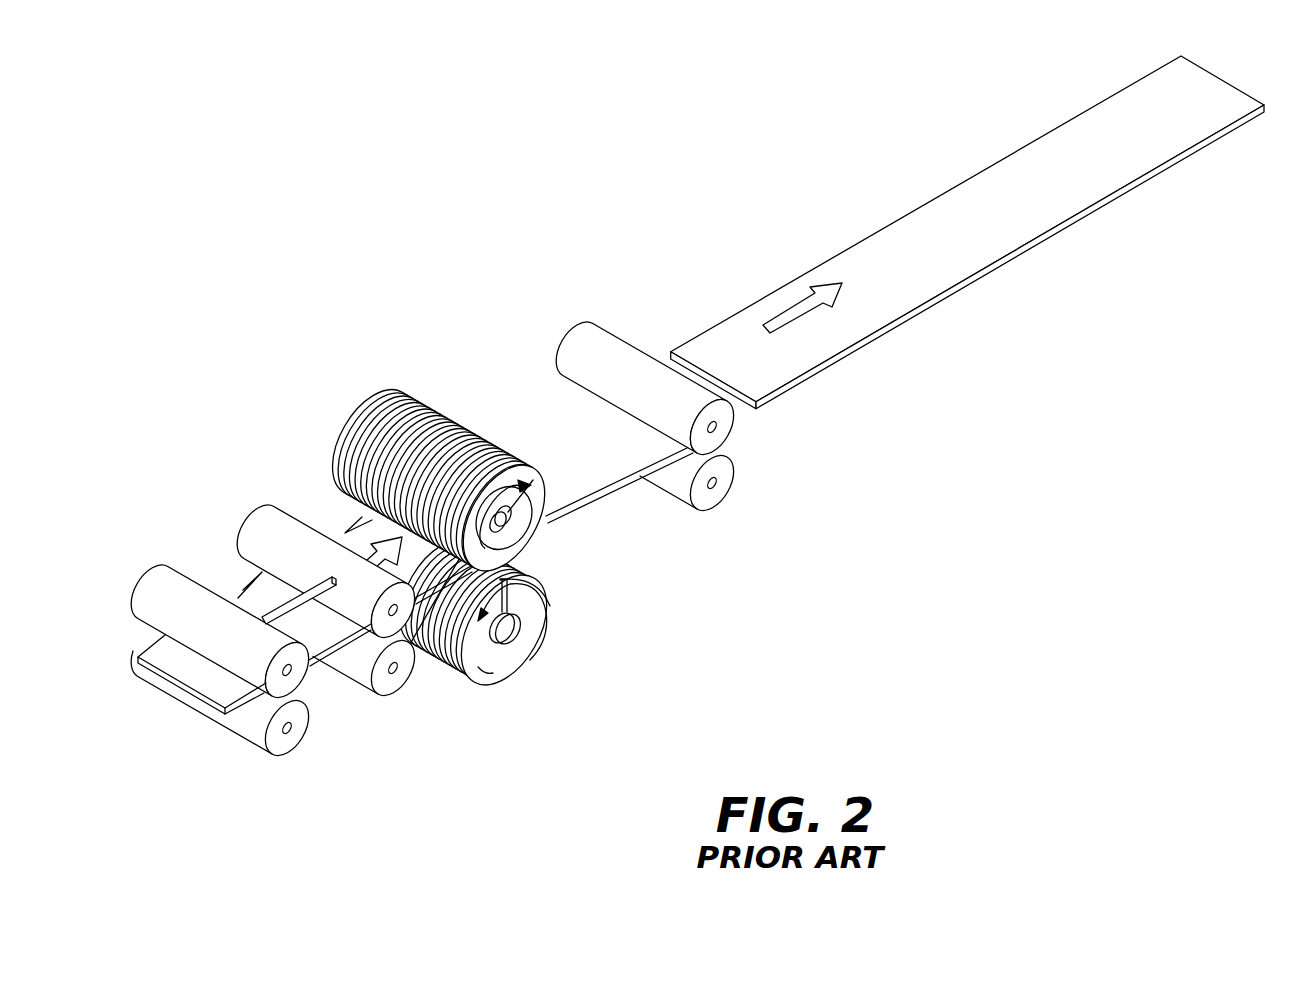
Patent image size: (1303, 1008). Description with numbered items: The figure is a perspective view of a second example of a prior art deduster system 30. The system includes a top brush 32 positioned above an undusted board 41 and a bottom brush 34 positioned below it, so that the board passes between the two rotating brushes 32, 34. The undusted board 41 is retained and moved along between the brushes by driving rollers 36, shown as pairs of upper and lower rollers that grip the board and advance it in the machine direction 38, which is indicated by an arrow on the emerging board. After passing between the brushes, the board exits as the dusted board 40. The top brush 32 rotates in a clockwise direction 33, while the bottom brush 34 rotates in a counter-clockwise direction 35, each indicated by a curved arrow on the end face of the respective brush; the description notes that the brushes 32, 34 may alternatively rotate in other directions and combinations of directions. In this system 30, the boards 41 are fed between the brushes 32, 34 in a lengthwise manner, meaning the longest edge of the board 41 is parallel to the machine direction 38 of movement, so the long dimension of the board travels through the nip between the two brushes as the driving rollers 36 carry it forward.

The prior art deduster system 30 is at (972, 591).
The top brush 32 is at (436, 404).
The clockwise direction 33 is at (538, 547).
The bottom brush 34 is at (438, 652).
The counter-clockwise direction 35 is at (527, 664).
The driving rollers 36 is at (616, 352).
The machine direction 38 is at (767, 333).
The dusted board 40 is at (1002, 235).
The undusted board 41 is at (267, 605).